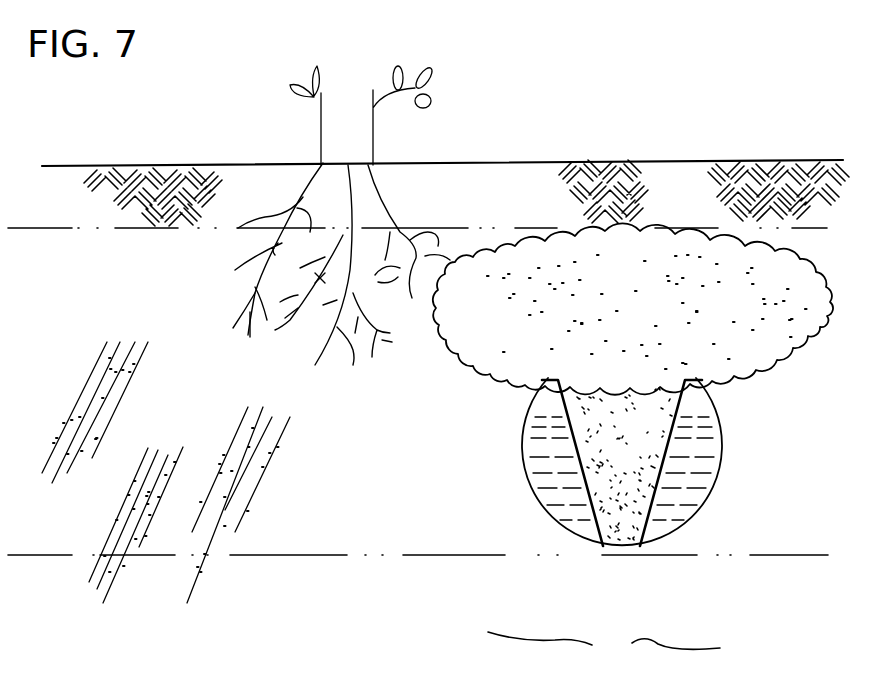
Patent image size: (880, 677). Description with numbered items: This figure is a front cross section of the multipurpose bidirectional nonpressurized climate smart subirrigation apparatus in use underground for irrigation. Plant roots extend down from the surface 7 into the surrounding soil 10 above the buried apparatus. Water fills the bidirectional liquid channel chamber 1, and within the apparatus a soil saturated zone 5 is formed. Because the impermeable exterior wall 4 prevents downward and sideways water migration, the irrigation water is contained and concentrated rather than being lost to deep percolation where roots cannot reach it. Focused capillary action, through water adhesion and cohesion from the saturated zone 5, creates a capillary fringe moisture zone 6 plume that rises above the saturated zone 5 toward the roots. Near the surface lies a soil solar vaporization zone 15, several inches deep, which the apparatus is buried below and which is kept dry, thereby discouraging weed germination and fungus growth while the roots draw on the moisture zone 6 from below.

The bidirectional liquid channel chamber 1 is at (706, 486).
The impermeable exterior wall 4 is at (627, 663).
The soil saturated zone 5 is at (634, 468).
The capillary fringe moisture zone 6 is at (677, 328).
The surface 7 is at (78, 162).
The surrounding soil 10 is at (186, 409).
The soil solar vaporization zone 15 is at (96, 221).